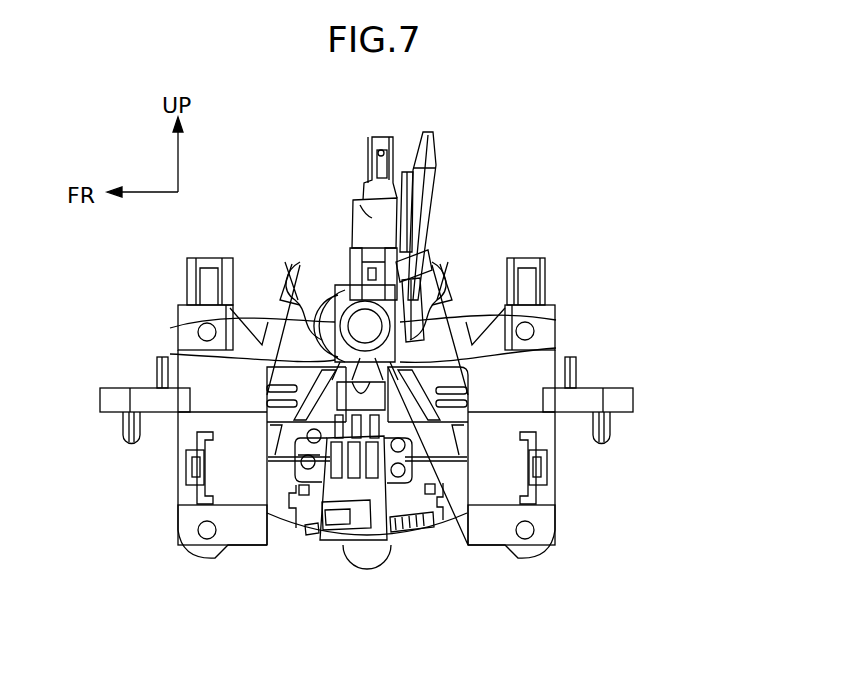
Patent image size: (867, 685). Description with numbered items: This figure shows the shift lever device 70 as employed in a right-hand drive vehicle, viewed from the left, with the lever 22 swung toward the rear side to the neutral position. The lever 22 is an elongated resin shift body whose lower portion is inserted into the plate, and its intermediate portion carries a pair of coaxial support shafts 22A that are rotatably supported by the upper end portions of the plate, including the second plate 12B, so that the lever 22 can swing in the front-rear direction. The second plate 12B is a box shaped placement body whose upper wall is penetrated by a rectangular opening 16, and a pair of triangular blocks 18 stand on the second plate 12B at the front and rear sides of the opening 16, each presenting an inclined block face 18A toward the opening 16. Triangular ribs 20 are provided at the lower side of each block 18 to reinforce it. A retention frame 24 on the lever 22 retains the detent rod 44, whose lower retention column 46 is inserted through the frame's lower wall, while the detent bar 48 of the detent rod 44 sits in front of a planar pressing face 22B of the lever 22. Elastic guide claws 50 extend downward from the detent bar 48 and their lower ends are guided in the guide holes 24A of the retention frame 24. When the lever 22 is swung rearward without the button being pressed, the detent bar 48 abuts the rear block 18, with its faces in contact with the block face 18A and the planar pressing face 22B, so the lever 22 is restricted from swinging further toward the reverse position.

The second plate 12B is at (556, 310).
The opening 16 is at (320, 282).
The block 18 is at (300, 272).
The block face 18A is at (305, 265).
The rib 20 is at (222, 262).
The lever 22 is at (371, 151).
The support shaft 22A is at (196, 358).
The planar pressing face 22B is at (368, 214).
The retention frame 24 is at (300, 305).
The guide hole 24A is at (245, 320).
The detent rod 44 is at (434, 140).
The retention column 46 is at (556, 346).
The detent bar 48 is at (415, 255).
The guide claw 50 is at (421, 300).
The shift lever device 70 is at (496, 174).